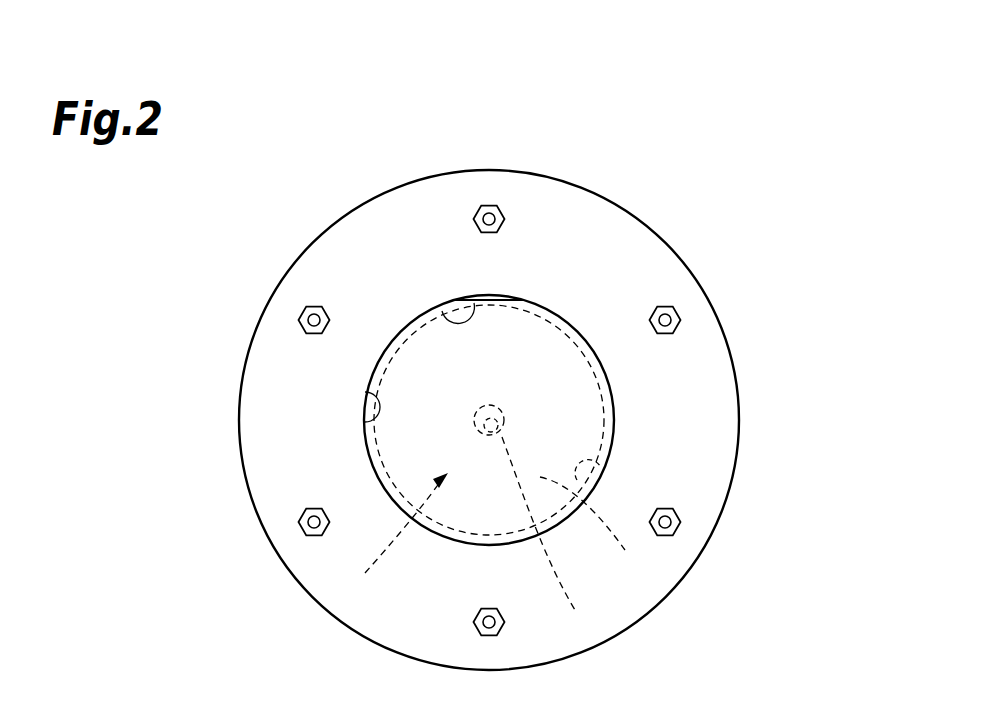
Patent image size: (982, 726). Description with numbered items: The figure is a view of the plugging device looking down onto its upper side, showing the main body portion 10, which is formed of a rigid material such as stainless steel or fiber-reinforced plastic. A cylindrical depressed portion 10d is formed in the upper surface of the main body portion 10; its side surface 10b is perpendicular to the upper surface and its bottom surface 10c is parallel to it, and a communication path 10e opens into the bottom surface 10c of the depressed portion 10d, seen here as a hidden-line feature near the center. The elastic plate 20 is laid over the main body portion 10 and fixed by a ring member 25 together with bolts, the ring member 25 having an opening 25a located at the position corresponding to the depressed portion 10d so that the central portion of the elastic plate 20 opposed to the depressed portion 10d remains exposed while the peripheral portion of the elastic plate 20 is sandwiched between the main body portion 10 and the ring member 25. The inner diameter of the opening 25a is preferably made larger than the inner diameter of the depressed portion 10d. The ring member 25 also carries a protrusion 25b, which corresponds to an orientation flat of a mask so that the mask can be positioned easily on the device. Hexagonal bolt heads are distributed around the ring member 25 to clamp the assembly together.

The main body portion 10 is at (602, 410).
The side surface 10b is at (600, 467).
The bottom surface 10c is at (625, 550).
The depressed portion 10d is at (365, 573).
The communication path 10e is at (575, 610).
The elastic plate 20 is at (562, 386).
The ring member 25 is at (692, 458).
The opening 25a is at (365, 417).
The protrusion 25b is at (440, 312).